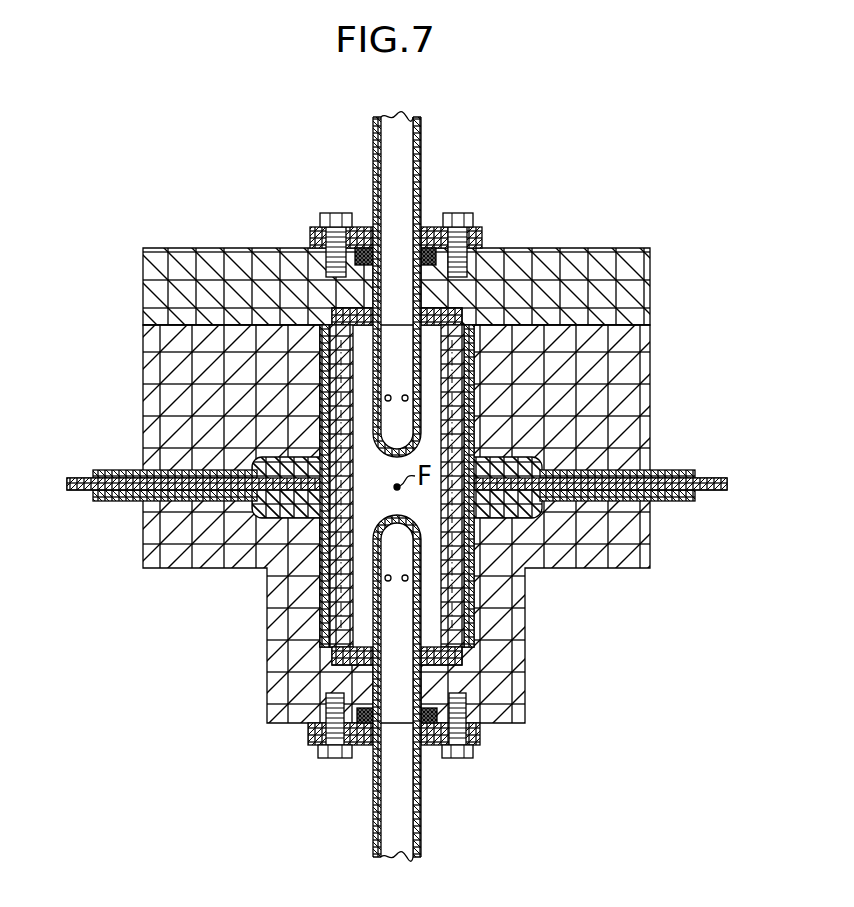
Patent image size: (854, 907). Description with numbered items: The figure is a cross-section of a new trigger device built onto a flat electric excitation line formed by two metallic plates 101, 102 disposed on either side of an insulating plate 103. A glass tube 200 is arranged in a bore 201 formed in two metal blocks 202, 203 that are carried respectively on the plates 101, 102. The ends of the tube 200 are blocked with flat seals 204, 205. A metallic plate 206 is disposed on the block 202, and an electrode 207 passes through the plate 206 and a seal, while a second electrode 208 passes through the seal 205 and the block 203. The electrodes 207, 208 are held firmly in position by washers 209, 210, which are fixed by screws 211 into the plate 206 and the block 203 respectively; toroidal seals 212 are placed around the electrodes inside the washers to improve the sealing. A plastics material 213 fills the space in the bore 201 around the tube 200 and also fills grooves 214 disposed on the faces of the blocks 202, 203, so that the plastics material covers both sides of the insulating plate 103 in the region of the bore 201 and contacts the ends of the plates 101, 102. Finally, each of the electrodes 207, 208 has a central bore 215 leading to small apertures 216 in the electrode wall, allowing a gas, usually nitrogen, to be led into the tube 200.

The metallic plate 101 is at (682, 473).
The metallic plate 102 is at (397, 523).
The insulating plate 103 is at (678, 503).
The glass tube 200 is at (477, 360).
The bore 201 is at (478, 382).
The metal block 202 is at (175, 372).
The metal block 203 is at (622, 548).
The flat seal 204 is at (467, 313).
The flat seal 205 is at (463, 656).
The metallic plate 206 is at (190, 270).
The electrode 207 is at (421, 150).
The electrode 208 is at (421, 808).
The washer 209 is at (357, 232).
The washer 210 is at (320, 728).
The screw 211 is at (472, 222).
The toroidal seal 212 is at (432, 227).
The plastics material 213 is at (322, 360).
The groove 214 is at (542, 452).
The central bore 215 is at (373, 140).
The aperture 216 is at (386, 398).